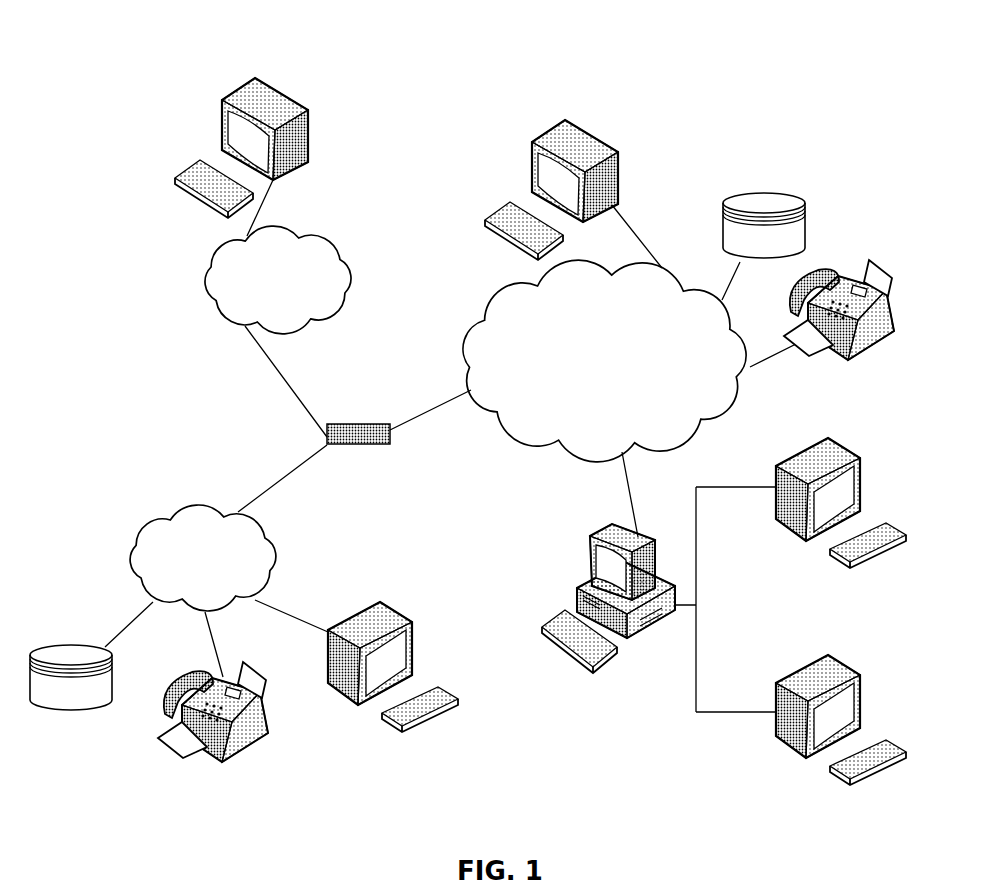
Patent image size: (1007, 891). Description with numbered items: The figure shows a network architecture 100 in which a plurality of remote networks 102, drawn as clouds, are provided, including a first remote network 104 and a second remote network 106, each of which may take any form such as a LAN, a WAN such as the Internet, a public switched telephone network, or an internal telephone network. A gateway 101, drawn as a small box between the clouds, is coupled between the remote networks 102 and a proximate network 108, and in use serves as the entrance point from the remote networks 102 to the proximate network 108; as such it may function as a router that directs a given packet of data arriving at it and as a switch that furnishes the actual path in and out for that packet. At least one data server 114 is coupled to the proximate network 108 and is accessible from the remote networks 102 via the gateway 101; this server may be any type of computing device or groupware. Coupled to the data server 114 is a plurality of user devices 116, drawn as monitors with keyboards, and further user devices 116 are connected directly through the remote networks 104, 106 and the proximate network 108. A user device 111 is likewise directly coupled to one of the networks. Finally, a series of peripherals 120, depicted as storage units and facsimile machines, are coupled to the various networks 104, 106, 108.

The architecture 100 is at (150, 60).
The gateway 101 is at (343, 422).
The remote networks 102 is at (183, 341).
The first remote network 104 is at (130, 530).
The second remote network 106 is at (350, 250).
The proximate network 108 is at (712, 424).
The user device 111 is at (617, 152).
The data server 114 is at (590, 549).
The user devices 116 is at (308, 118).
The peripheral 120 is at (75, 712).